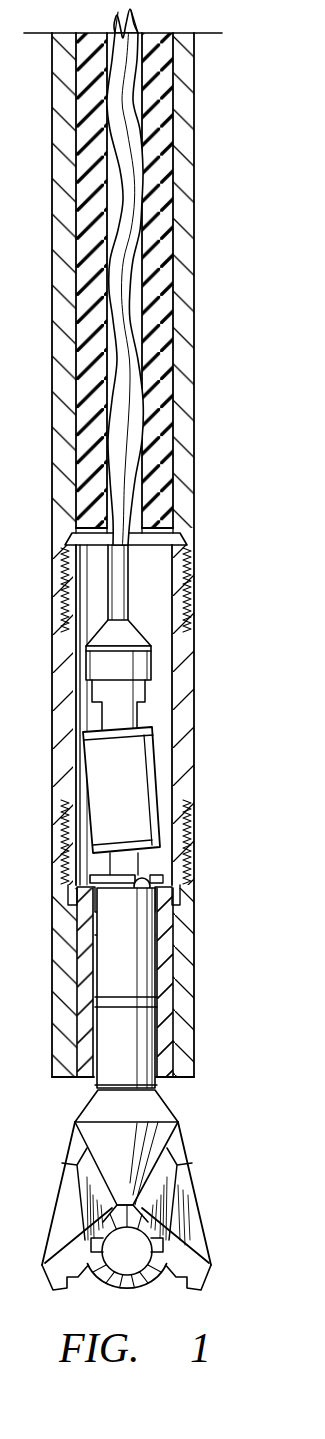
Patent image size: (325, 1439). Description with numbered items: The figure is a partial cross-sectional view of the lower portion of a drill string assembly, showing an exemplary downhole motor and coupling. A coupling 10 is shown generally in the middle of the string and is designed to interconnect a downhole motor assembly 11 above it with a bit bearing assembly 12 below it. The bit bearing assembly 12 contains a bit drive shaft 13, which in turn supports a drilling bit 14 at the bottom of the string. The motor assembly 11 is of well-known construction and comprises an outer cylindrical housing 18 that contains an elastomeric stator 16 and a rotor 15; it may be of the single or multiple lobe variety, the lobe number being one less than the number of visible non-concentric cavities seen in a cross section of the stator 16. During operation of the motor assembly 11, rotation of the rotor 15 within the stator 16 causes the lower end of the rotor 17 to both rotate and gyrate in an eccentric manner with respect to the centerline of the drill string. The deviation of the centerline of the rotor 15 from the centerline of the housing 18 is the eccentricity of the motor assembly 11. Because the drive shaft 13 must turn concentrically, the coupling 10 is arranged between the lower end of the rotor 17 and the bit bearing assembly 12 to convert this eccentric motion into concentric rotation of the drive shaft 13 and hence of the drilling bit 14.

The coupling 10 is at (155, 768).
The downhole motor assembly 11 is at (164, 289).
The bit bearing assembly 12 is at (192, 979).
The bit drive shaft 13 is at (145, 1055).
The drilling bit 14 is at (147, 1142).
The rotor 15 is at (123, 338).
The elastomeric stator 16 is at (168, 398).
The lower end of the rotor 17 is at (127, 638).
The outer cylindrical housing 18 is at (183, 150).